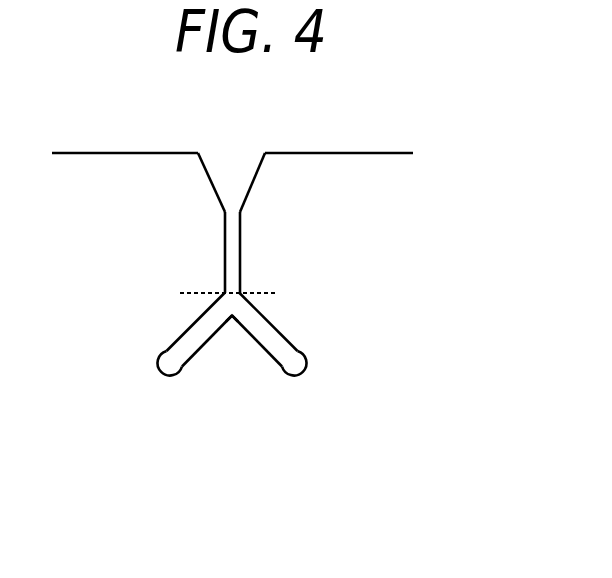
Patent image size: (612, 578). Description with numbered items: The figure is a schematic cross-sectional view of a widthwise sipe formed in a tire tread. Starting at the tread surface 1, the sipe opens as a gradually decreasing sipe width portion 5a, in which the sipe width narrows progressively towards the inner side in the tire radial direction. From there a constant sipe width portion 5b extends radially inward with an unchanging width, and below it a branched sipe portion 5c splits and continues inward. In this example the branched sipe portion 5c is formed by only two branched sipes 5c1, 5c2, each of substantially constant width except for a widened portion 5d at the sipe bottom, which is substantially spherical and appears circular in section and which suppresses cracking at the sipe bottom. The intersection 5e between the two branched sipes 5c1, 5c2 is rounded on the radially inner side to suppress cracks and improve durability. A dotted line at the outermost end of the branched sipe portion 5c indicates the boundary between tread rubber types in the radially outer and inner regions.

The tread surface 1 is at (351, 153).
The gradually decreasing sipe width portion 5a is at (222, 183).
The constant sipe width portion 5b is at (229, 250).
The branched sipe portion 5c is at (259, 335).
The branched sipe 5c1 is at (200, 335).
The branched sipe 5c2 is at (265, 335).
The widened portion 5d is at (171, 367).
The intersection 5e is at (232, 318).